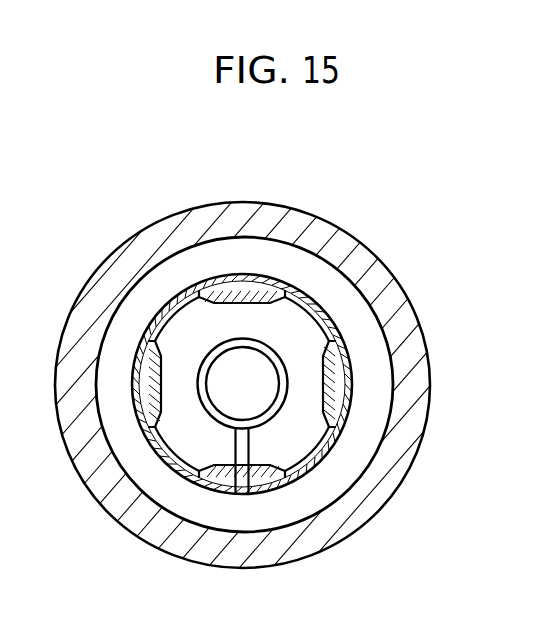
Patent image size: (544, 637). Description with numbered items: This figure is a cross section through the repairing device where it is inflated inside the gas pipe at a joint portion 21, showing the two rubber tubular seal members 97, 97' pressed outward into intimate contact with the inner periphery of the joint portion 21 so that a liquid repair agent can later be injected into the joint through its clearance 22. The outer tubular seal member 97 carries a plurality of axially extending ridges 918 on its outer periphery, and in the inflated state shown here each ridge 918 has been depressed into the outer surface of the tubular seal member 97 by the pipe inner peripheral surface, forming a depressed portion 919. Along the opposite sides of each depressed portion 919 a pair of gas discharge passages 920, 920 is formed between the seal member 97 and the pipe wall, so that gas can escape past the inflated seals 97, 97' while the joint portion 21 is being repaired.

The joint portion 21 is at (243, 212).
The clearance 22 is at (155, 288).
The tubular seal member 97 is at (260, 324).
The tubular seal member 97' is at (302, 326).
The ridge 918 is at (360, 385).
The depressed portion 919 is at (353, 361).
The gas discharge passage 920 is at (340, 327).